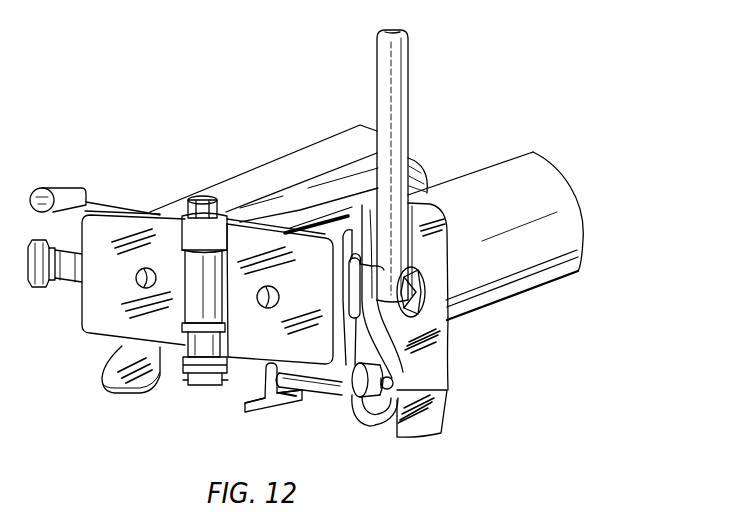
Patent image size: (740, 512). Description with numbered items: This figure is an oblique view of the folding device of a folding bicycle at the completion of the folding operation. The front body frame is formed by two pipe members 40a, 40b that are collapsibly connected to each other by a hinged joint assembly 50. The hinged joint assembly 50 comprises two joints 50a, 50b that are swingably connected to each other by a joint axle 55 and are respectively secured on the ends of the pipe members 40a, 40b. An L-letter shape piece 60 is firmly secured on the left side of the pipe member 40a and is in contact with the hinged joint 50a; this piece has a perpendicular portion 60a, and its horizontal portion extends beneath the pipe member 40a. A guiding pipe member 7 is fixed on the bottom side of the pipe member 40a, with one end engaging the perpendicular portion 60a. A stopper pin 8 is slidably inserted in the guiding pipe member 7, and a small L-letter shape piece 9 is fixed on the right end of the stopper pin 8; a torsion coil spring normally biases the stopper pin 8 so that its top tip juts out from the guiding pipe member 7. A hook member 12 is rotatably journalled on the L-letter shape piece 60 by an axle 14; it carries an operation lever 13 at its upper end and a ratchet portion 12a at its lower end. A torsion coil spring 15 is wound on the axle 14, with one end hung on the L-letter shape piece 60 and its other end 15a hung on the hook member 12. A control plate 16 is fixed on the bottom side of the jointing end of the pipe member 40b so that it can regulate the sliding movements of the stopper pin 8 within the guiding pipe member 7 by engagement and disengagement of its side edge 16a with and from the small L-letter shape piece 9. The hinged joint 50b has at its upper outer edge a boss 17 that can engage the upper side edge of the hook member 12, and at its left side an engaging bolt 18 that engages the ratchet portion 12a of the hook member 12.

The guiding pipe member 7 is at (322, 397).
The stopper pin 8 is at (386, 392).
The small L-letter shape piece 9 is at (263, 412).
The hook member 12 is at (448, 334).
The ratchet portion 12a is at (398, 391).
The operation lever 13 is at (392, 96).
The axle 14 is at (418, 294).
The torsion coil spring 15 is at (347, 289).
The other end of torsion coil spring 15a is at (357, 255).
The control plate 16 is at (105, 378).
The side edge 16a is at (146, 390).
The boss 17 is at (60, 187).
The engaging bolt 18 is at (53, 290).
The pipe member 40a is at (510, 195).
The pipe member 40b is at (290, 165).
The hinged joint assembly 50 is at (268, 226).
The hinged joint 50a is at (250, 350).
The hinged joint 50b is at (104, 330).
The joint axle 55 is at (200, 205).
The L-letter shape piece 60 is at (356, 350).
The perpendicular portion 60a is at (360, 395).